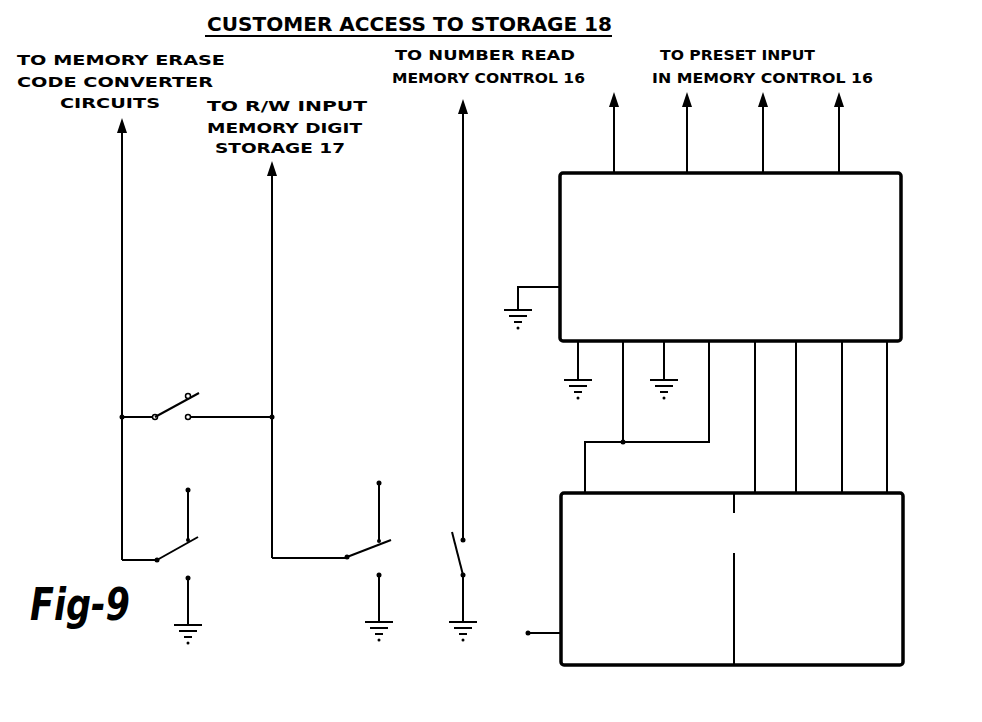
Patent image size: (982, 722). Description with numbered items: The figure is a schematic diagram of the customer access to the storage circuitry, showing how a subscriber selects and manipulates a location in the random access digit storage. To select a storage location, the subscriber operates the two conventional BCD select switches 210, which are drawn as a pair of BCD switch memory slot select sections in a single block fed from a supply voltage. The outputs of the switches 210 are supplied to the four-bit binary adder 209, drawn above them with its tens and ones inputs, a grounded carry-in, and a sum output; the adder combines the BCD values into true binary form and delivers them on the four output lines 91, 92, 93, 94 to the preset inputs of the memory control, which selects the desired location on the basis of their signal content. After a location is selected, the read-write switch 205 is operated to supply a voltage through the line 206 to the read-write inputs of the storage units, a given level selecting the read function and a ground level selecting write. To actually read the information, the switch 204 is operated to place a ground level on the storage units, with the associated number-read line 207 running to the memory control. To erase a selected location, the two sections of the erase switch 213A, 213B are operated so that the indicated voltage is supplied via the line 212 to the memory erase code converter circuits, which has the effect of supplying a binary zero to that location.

The output line 91 is at (602, 132).
The output line 92 is at (673, 132).
The output line 93 is at (751, 132).
The output line 94 is at (825, 132).
The switch 204 is at (500, 587).
The switch 205 is at (384, 555).
The line 206 is at (307, 359).
The line to number read memory control 207 is at (483, 319).
The 4-bit binary adder 209 is at (710, 222).
The BCD select switches 210 is at (745, 540).
The line 212 is at (137, 339).
The erase switch section 213A is at (205, 420).
The erase switch section 213B is at (191, 560).